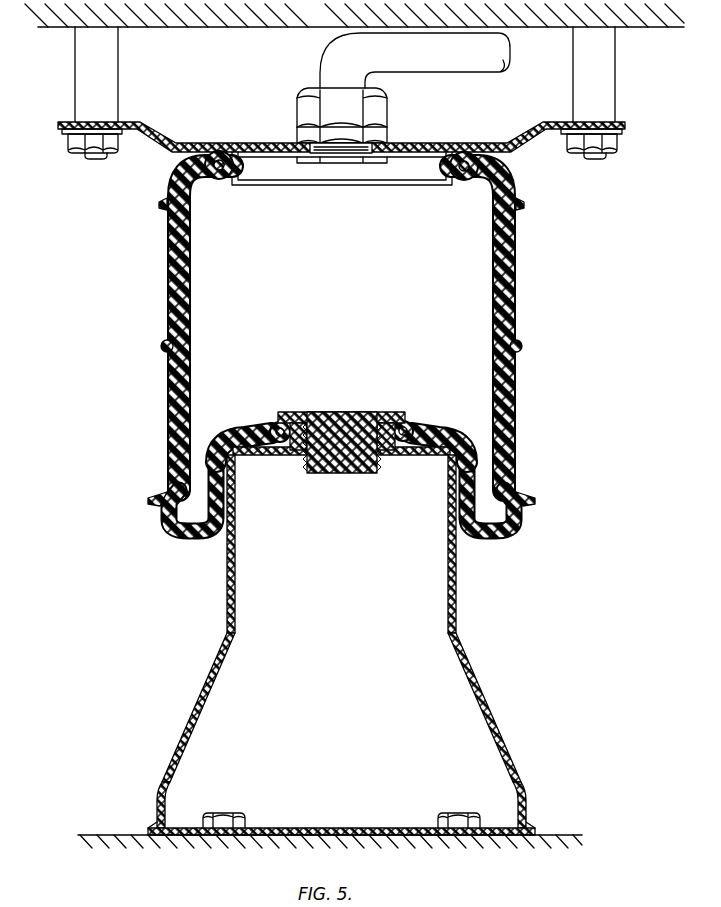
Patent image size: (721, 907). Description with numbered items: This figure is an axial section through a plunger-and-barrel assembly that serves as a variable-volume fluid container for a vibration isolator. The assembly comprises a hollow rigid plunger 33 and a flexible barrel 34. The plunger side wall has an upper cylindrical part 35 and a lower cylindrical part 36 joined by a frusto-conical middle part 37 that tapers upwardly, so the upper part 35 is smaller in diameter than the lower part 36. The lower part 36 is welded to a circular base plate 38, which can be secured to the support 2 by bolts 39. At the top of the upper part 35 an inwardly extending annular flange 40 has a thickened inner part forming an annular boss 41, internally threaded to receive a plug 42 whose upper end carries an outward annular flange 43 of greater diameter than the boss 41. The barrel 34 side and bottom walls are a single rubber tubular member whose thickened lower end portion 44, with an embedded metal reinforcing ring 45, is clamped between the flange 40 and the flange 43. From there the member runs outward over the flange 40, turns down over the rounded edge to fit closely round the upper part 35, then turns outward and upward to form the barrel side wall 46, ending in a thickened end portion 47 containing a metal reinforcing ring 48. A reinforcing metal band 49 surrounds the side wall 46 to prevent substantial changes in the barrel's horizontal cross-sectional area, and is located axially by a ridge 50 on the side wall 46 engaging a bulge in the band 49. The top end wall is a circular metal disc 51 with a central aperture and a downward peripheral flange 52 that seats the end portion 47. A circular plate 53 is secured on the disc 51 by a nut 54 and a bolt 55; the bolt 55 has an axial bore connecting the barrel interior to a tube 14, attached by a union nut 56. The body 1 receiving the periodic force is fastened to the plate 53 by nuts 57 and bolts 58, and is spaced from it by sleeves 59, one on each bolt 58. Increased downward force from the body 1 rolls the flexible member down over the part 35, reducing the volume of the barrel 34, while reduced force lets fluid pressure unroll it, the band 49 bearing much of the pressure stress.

The body 1 is at (318, 27).
The support 2 is at (571, 840).
The tube 14 is at (479, 58).
The hollow rigid plunger 33 is at (317, 645).
The flexible barrel 34 is at (528, 290).
The upper cylindrical part of plunger side wall 35 is at (458, 579).
The lower cylindrical part of plunger side wall 36 is at (156, 806).
The middle part of plunger side wall 37 is at (182, 740).
The circular base plate 38 is at (345, 828).
The bolts 39 is at (224, 814).
The annular flange 40 is at (261, 456).
The annular boss 41 is at (386, 452).
The plug 42 is at (311, 474).
The annular flange of plug 43 is at (293, 412).
The lower end portion of flexible member 44 is at (426, 432).
The metal reinforcing ring 45 is at (272, 426).
The barrel side wall 46 is at (180, 278).
The thickened end portion 47 is at (219, 180).
The metal reinforcing ring 48 is at (464, 181).
The reinforcing metal band 49 is at (512, 452).
The ridge 50 is at (522, 347).
The circular metal disc 51 is at (428, 158).
The flange of disc 52 is at (239, 184).
The circular plate 53 is at (163, 134).
The nut 54 is at (383, 130).
The bolt 55 is at (345, 154).
The union nut 56 is at (308, 97).
The nuts 57 is at (76, 146).
The bolts 58 is at (98, 160).
The sleeves 59 is at (108, 85).